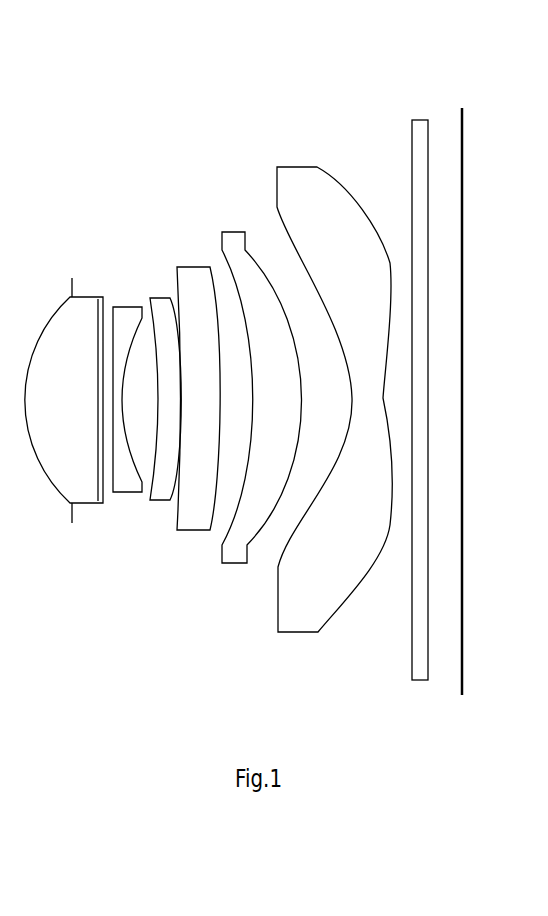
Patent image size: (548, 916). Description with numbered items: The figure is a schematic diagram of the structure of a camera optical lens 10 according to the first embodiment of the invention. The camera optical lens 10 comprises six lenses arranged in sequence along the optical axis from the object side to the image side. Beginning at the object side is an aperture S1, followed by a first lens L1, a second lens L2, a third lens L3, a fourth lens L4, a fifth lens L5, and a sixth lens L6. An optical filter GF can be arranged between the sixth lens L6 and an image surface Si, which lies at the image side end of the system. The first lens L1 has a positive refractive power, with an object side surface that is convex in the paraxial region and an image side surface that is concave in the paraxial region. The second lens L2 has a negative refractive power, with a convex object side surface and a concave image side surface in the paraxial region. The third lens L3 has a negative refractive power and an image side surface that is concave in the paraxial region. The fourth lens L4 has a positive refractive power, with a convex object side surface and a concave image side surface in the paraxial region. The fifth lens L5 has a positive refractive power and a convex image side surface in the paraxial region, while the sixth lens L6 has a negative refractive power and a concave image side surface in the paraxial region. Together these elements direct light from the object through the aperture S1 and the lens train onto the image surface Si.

The camera optical lens 10 is at (259, 32).
The aperture S1 is at (56, 398).
The first lens L1 is at (64, 388).
The second lens L2 is at (127, 386).
The third lens L3 is at (164, 386).
The fourth lens L4 is at (198, 385).
The fifth lens L5 is at (262, 383).
The sixth lens L6 is at (334, 384).
The optical filter GF is at (416, 385).
The image surface Si is at (460, 388).